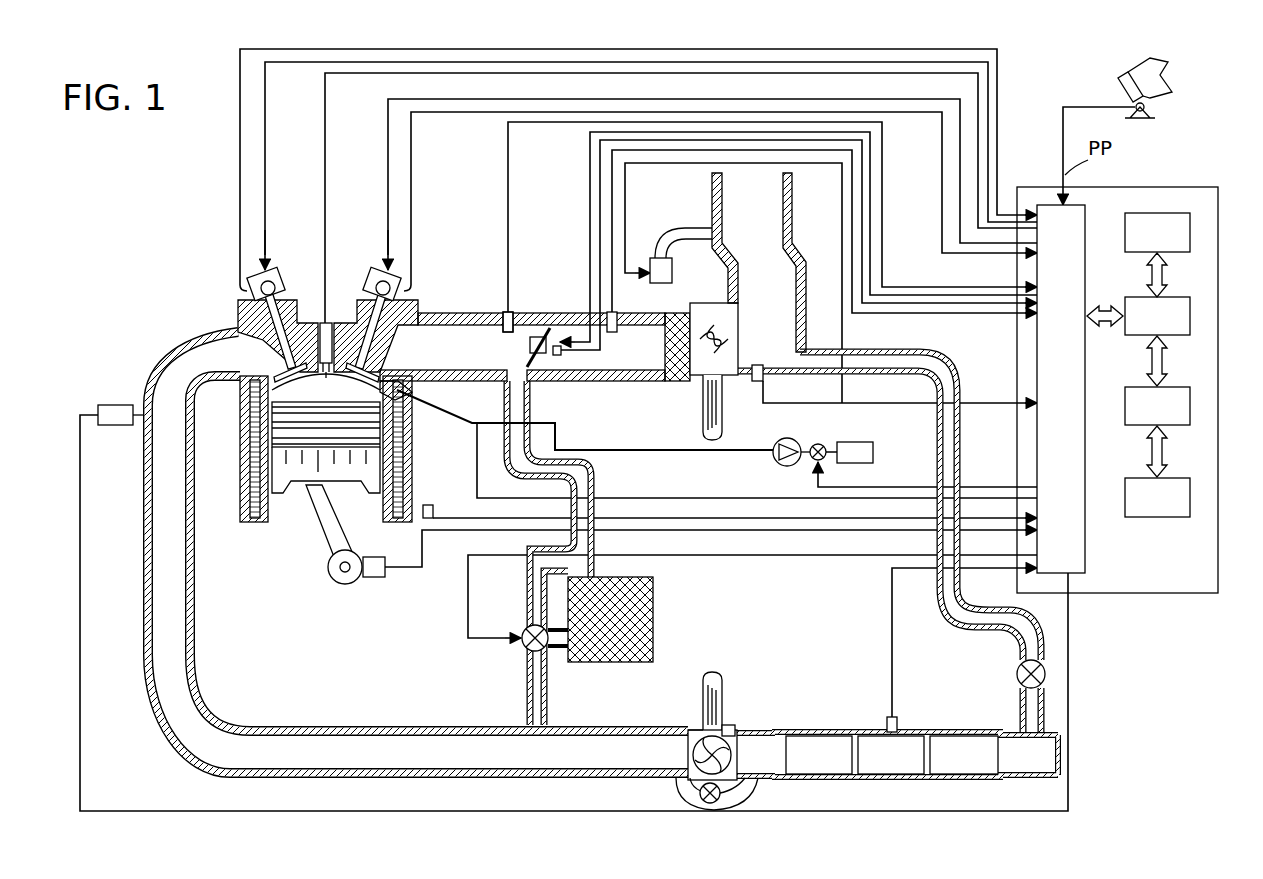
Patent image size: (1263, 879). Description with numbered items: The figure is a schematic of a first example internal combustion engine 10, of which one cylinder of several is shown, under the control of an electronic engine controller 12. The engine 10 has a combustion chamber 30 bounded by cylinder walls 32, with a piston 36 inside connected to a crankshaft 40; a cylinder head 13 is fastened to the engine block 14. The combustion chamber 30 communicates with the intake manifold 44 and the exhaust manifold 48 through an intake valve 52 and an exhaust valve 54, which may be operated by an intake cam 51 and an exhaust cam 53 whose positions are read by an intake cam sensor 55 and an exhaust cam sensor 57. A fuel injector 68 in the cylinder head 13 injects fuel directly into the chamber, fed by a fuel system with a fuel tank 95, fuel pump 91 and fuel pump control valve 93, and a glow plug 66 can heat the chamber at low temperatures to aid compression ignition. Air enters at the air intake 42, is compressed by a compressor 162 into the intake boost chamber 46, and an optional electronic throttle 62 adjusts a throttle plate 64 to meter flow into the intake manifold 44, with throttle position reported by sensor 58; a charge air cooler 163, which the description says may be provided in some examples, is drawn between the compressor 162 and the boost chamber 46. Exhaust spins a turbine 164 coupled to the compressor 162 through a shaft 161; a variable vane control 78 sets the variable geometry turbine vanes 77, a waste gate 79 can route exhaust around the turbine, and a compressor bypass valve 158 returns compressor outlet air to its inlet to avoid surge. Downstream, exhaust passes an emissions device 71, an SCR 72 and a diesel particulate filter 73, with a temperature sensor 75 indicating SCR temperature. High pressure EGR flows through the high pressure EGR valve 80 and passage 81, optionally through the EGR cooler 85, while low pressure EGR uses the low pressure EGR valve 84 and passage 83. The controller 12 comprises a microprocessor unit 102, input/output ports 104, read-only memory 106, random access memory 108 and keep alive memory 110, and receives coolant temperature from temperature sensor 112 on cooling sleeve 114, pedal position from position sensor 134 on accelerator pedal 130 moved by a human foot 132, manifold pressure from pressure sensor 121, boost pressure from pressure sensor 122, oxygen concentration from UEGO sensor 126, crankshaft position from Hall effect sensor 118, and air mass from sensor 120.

The internal combustion engine 10 is at (180, 262).
The electronic engine controller 12 is at (1200, 190).
The cylinder head 13 is at (415, 302).
The engine block 14 is at (250, 395).
The combustion chamber 30 is at (322, 392).
The cylinder walls 32 is at (280, 500).
The piston 36 is at (316, 492).
The crankshaft 40 is at (335, 583).
The air intake 42 is at (737, 239).
The intake manifold 44 is at (447, 361).
The intake boost chamber 46 is at (611, 361).
The exhaust manifold 48 is at (194, 367).
The intake cam 51 is at (380, 270).
The intake valve 52 is at (378, 372).
The exhaust cam 53 is at (270, 270).
The exhaust valve 54 is at (282, 372).
The intake cam sensor 55 is at (395, 288).
The exhaust cam sensor 57 is at (258, 292).
The throttle position sensor 58 is at (562, 375).
The electronic throttle 62 is at (513, 318).
The throttle plate 64 is at (545, 328).
The glow plug 66 is at (322, 352).
The fuel injector 68 is at (408, 398).
The emissions device 71 is at (819, 755).
The SCR 72 is at (891, 755).
The diesel particulate filter 73 is at (964, 755).
The temperature sensor 75 is at (897, 717).
The variable geometry turbine vanes 77 is at (731, 755).
The variable vane control 78 is at (735, 728).
The waste gate 79 is at (722, 797).
The high pressure EGR valve 80 is at (522, 632).
The high pressure EGR passage 81 is at (512, 418).
The low pressure EGR passage 83 is at (945, 610).
The low pressure EGR valve 84 is at (1017, 672).
The EGR cooler 85 is at (653, 608).
The fuel pump 91 is at (790, 446).
The fuel pump control valve 93 is at (815, 462).
The fuel tank 95 is at (845, 463).
The microprocessor unit 102 is at (1192, 318).
The input/output ports 104 is at (1088, 215).
The read-only memory 106 is at (1192, 235).
The random access memory 108 is at (1192, 405).
The keep alive memory 110 is at (1192, 495).
The temperature sensor 112 is at (428, 506).
The cooling sleeve 114 is at (253, 446).
The Hall effect sensor 118 is at (375, 578).
The air mass sensor 120 is at (763, 382).
The pressure sensor 121 is at (505, 312).
The pressure sensor 122 is at (617, 320).
The UEGO sensor 126 is at (98, 410).
The accelerator pedal 130 is at (1125, 85).
The human foot 132 is at (1170, 78).
The position sensor 134 is at (1152, 112).
The compressor bypass valve 158 is at (660, 258).
The shaft 161 is at (722, 410).
The compressor 162 is at (700, 380).
The charge air cooler 163 is at (675, 380).
The turbine 164 is at (689, 732).